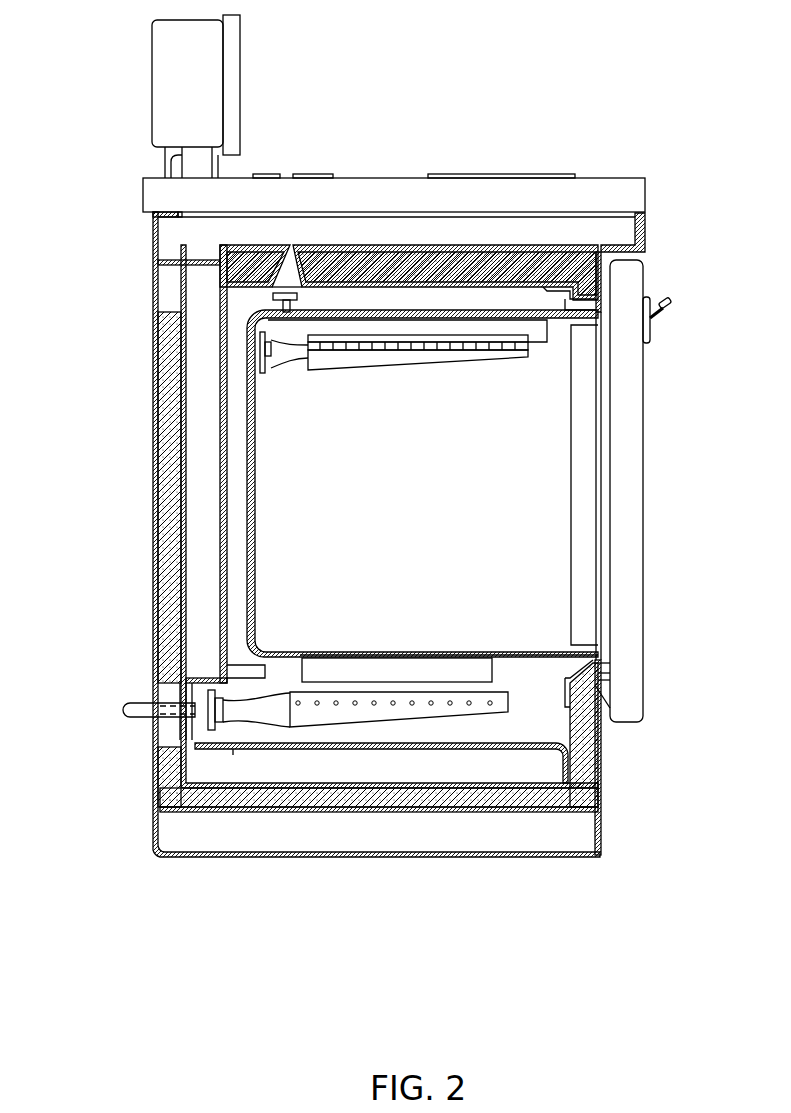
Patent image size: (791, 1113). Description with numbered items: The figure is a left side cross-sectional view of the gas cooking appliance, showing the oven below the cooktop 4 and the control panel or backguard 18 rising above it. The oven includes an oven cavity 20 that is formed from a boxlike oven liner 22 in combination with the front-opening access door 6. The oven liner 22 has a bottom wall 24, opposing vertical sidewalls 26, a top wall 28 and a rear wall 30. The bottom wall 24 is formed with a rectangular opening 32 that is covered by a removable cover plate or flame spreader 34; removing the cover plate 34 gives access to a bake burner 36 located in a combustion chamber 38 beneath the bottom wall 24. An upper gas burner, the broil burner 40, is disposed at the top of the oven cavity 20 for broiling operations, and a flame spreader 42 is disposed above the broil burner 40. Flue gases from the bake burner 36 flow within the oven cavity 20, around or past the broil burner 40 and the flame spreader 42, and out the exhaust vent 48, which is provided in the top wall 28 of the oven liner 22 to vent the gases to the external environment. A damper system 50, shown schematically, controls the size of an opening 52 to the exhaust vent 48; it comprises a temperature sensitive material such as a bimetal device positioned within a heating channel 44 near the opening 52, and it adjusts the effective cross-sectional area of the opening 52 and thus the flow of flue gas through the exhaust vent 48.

The cooktop 4 is at (608, 180).
The front-opening access door 6 is at (650, 378).
The control panel / backguard 18 is at (230, 28).
The oven cavity 20 is at (436, 508).
The oven liner 22 is at (238, 461).
The bottom wall 24 is at (515, 657).
The vertical sidewalls 26 is at (543, 497).
The top wall 28 is at (483, 317).
The rear wall 30 is at (256, 518).
The rectangular opening 32 is at (296, 636).
The cover plate 34 is at (432, 683).
The bake burner 36 is at (500, 697).
The combustion chamber 38 is at (483, 727).
The broil burner 40 is at (410, 357).
The flame spreader 42 is at (357, 325).
The heating channel 44 is at (360, 280).
The exhaust vent 48 is at (180, 233).
The damper system 50 is at (256, 298).
The opening 52 is at (296, 252).